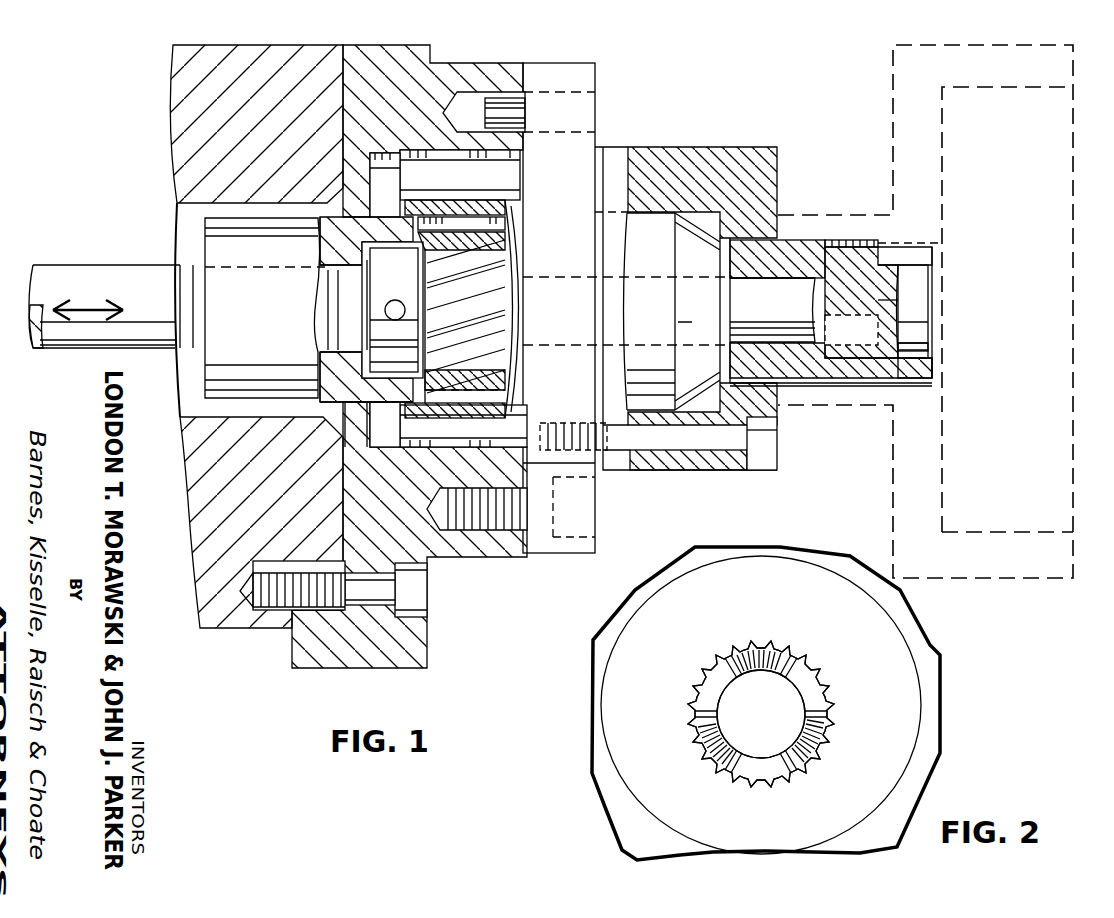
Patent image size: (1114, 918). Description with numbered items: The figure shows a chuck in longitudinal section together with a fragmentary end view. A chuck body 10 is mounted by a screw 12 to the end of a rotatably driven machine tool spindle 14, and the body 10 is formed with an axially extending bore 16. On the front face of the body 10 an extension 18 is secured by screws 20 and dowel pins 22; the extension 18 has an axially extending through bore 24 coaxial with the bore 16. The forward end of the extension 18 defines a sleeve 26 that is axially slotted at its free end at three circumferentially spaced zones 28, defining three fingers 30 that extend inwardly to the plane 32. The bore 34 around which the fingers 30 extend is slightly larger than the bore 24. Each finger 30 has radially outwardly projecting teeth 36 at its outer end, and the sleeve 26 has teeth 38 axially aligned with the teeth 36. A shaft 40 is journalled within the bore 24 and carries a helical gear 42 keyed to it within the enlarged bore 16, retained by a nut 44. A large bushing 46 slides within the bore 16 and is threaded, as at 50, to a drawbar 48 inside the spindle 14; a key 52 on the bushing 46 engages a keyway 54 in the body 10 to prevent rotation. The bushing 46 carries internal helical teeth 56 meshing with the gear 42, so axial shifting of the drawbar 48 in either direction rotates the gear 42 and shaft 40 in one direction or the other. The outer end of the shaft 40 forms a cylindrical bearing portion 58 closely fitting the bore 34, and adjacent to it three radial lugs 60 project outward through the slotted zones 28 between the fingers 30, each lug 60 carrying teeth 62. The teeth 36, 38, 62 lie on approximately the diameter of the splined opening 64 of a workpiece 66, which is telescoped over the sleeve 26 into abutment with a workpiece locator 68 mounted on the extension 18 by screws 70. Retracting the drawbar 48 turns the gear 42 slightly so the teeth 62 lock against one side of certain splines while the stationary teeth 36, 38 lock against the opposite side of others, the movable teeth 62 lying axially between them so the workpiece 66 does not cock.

In FIG. 1, the chuck body 10 is at (498, 550).
In FIG. 1, the screw 12 is at (425, 604).
In FIG. 1, the machine tool spindle 14 is at (248, 628).
In FIG. 1, the bore 16 is at (374, 447).
In FIG. 1, the extension 18 is at (653, 218).
In FIG. 1, the screws 20 is at (590, 508).
In FIG. 1, the dowel pins 22 is at (500, 108).
In FIG. 1, the through bore 24 is at (742, 283).
In FIG. 1, the sleeve 26 is at (796, 380).
In FIG. 1, the slotted zones 28 is at (935, 262).
In FIG. 2, the slotted zones 28 is at (727, 657).
In FIG. 1, the fingers 30 is at (897, 372).
In FIG. 2, the fingers 30 is at (703, 692).
In FIG. 1, the plane 32 is at (777, 260).
In FIG. 1, the bore 34 is at (927, 352).
In FIG. 1, the teeth 36 is at (922, 384).
In FIG. 2, the teeth 36 is at (827, 700).
In FIG. 1, the teeth 38 is at (812, 386).
In FIG. 1, the shaft 40 is at (772, 277).
In FIG. 1, the helical gear 42 is at (492, 279).
In FIG. 1, the nut 44 is at (418, 304).
In FIG. 1, the bushing 46 is at (446, 440).
In FIG. 1, the drawbar 48 is at (115, 266).
In FIG. 1, the threaded connection 50 is at (230, 264).
In FIG. 1, the key 52 is at (488, 165).
In FIG. 1, the keyway 54 is at (386, 153).
In FIG. 1, the helical teeth 56 is at (392, 310).
In FIG. 1, the bearing portion 58 is at (927, 278).
In FIG. 2, the bearing portion 58 is at (787, 690).
In FIG. 1, the lugs 60 is at (858, 252).
In FIG. 2, the lugs 60 is at (762, 668).
In FIG. 1, the teeth 62 is at (847, 240).
In FIG. 2, the teeth 62 is at (777, 650).
In FIG. 1, the splined opening 64 is at (922, 238).
In FIG. 1, the workpiece 66 is at (932, 128).
In FIG. 1, the workpiece locator 68 is at (762, 160).
In FIG. 1, the screws 70 is at (705, 470).